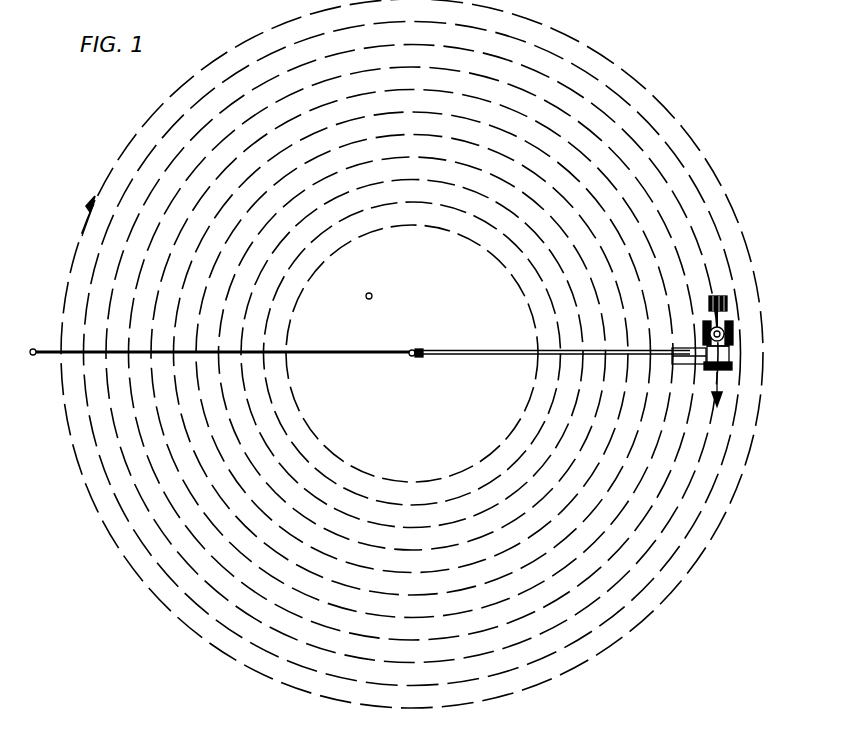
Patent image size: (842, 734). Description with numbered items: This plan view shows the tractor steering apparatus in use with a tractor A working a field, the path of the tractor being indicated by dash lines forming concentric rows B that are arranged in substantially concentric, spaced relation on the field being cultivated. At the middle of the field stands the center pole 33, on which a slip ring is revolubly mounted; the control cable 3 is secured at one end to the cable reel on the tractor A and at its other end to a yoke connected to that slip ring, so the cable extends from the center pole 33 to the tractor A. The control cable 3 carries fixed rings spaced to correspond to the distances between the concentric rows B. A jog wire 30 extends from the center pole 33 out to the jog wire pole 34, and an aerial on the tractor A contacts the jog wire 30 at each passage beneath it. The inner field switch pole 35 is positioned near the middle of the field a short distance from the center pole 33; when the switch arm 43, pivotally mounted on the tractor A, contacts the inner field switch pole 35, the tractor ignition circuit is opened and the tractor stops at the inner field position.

The control cable 3 is at (514, 356).
The jog wire 30 is at (318, 356).
The center pole 33 is at (416, 349).
The jog wire pole 34 is at (34, 356).
The inner field switch pole 35 is at (372, 295).
The switch arm 43 is at (685, 365).
The tractor A is at (735, 333).
The concentric rows B is at (595, 542).